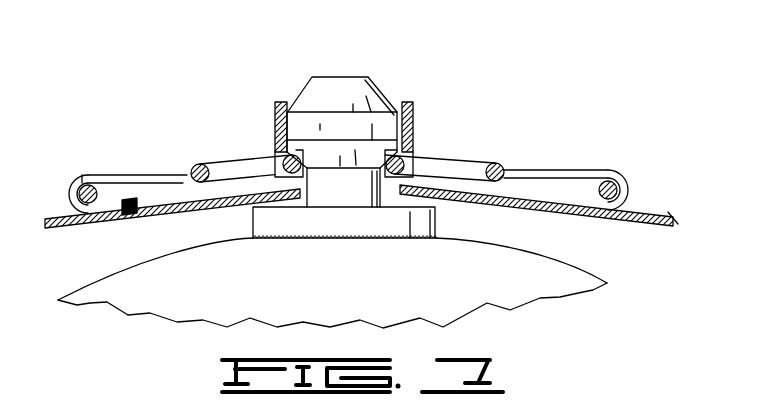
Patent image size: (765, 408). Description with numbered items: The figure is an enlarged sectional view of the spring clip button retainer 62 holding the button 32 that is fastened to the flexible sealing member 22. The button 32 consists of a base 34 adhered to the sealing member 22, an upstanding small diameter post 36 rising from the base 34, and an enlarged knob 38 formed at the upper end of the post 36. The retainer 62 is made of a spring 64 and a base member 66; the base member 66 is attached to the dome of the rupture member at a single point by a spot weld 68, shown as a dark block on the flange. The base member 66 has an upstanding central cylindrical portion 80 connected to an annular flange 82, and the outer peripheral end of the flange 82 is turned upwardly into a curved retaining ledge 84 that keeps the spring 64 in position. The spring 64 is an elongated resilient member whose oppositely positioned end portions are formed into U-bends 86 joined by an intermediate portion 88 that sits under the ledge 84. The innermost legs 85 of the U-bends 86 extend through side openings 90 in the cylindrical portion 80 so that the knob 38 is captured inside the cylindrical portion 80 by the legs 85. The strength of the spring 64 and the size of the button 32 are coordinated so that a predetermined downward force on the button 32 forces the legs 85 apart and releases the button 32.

The flexible sealing member 22 is at (526, 270).
The button 32 is at (384, 76).
The base 34 is at (420, 223).
The post 36 is at (327, 190).
The enlarged knob 38 is at (396, 108).
The button retainer 62 is at (631, 180).
The spring 64 is at (498, 170).
The base member 66 is at (637, 184).
The spot weld 68 is at (130, 198).
The cylindrical portion 80 is at (278, 112).
The annular flange 82 is at (600, 162).
The retaining ledge 84 is at (76, 182).
The legs 85 is at (240, 220).
The U-bends 86 is at (215, 158).
The intermediate portion 88 is at (158, 174).
The side openings 90 is at (270, 155).